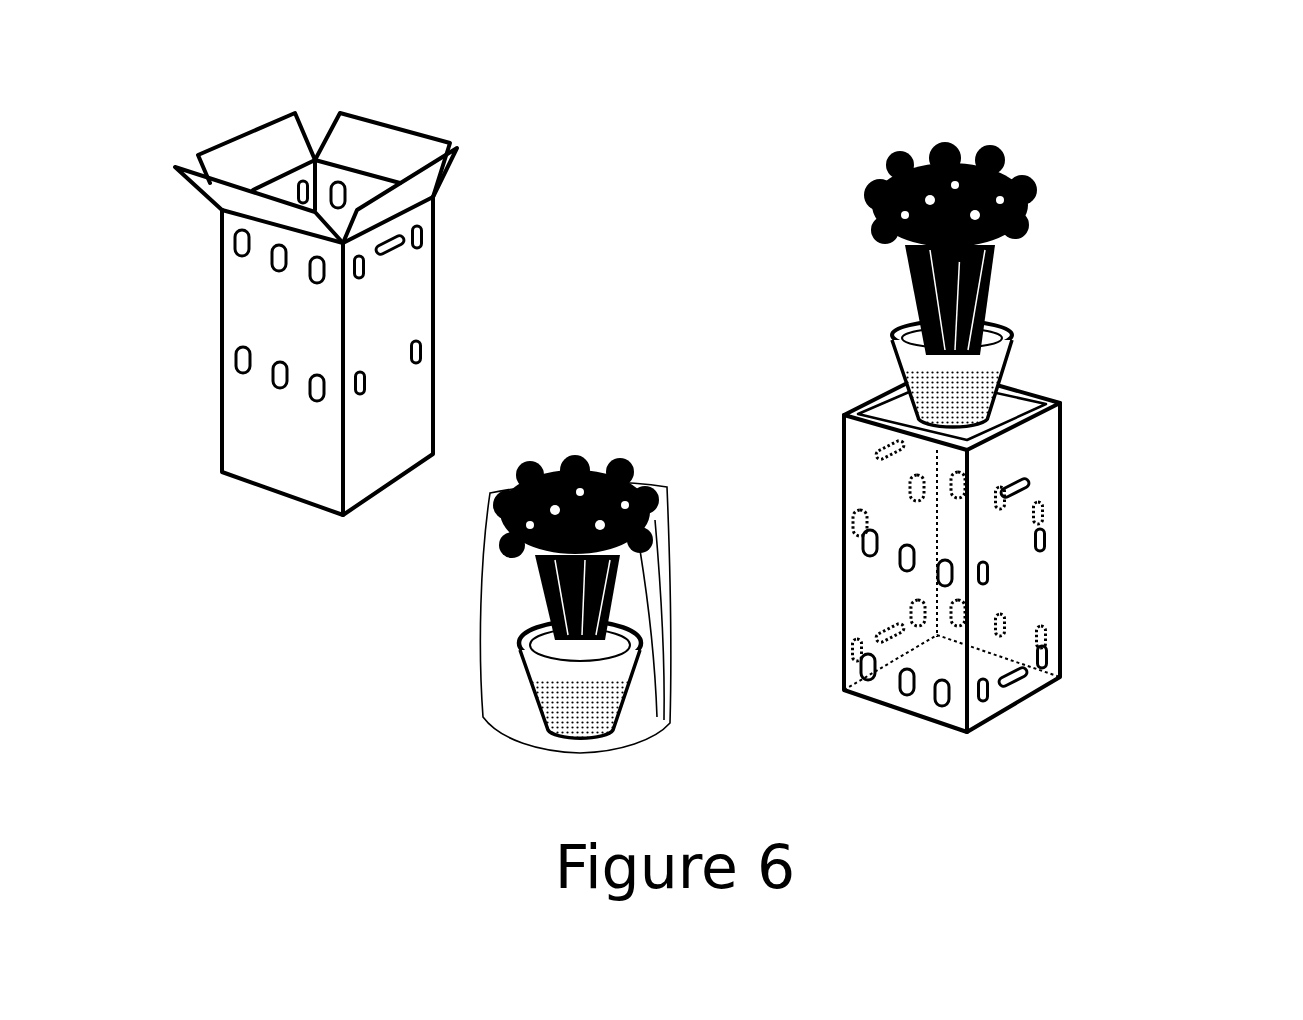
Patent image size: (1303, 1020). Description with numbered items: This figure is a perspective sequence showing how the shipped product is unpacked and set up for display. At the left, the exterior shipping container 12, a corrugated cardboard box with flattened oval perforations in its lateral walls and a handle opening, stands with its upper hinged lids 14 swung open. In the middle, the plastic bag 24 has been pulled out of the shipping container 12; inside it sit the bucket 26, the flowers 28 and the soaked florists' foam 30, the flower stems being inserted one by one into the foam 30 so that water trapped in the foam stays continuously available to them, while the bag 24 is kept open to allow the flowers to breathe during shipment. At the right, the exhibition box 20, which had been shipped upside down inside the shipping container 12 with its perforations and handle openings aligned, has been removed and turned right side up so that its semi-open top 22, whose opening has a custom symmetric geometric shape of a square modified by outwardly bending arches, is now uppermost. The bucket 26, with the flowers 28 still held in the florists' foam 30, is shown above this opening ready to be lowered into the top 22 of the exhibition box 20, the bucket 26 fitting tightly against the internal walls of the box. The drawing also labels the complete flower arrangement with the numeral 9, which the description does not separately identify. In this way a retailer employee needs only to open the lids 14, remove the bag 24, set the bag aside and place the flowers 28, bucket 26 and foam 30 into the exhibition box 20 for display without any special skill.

The potted plant 9 is at (954, 272).
The shipping container 12 is at (220, 247).
The upper hinged lids 14 is at (387, 152).
The exhibition box 20 is at (842, 430).
The semi-open top 22 is at (1060, 410).
The plastic bag 24 is at (478, 645).
The bucket 26 is at (1080, 349).
The flowers 28 is at (1030, 197).
The florists' foam 30 is at (988, 392).